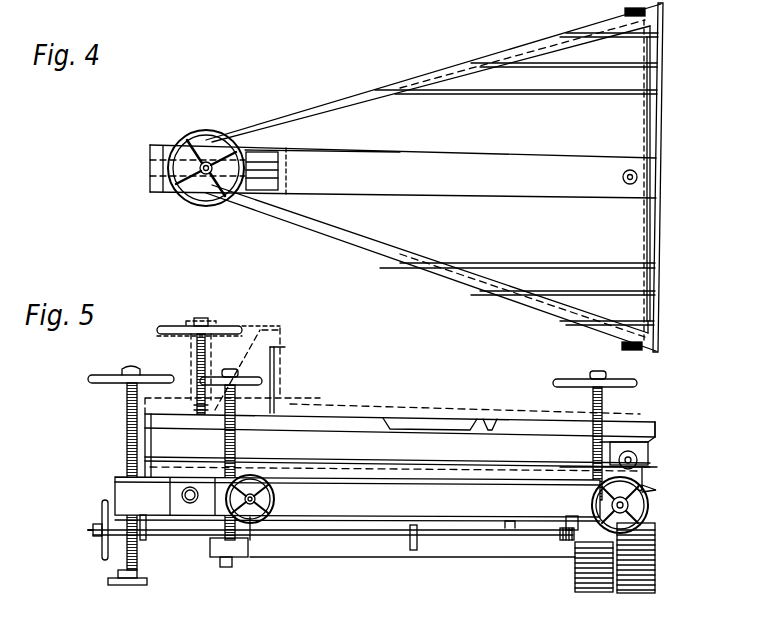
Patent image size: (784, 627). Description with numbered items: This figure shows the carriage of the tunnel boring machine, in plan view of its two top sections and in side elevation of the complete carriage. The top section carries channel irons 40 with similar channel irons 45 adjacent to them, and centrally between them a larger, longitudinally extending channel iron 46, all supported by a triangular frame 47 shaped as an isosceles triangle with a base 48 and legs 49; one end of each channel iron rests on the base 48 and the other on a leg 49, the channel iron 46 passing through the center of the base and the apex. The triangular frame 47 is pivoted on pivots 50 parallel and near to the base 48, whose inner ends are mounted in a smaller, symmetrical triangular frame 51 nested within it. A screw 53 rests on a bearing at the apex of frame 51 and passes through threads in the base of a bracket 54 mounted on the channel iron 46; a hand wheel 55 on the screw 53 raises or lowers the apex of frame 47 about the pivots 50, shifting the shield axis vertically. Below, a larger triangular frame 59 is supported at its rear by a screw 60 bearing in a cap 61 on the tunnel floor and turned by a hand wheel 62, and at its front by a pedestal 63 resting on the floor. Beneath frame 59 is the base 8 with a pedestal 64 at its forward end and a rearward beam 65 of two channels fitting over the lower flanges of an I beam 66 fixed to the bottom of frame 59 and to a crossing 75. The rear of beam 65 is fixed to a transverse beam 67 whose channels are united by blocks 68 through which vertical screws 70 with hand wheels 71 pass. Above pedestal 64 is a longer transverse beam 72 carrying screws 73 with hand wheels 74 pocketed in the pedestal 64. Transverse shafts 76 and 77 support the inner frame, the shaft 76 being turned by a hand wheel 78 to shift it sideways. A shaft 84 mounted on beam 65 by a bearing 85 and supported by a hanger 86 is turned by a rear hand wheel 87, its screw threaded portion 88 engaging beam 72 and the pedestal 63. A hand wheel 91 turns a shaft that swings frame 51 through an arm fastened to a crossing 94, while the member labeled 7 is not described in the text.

In FIG. 4, the frame member 7 is at (500, 292).
In FIG. 5, the frame member 7 is at (657, 439).
In FIG. 5, the base 8 is at (315, 558).
In FIG. 4, the channel irons 40 is at (556, 41).
In FIG. 5, the channel irons 40 is at (520, 420).
In FIG. 4, the channel irons 45 is at (516, 179).
In FIG. 5, the channel irons 45 is at (430, 418).
In FIG. 4, the channel iron 46 is at (403, 171).
In FIG. 5, the channel iron 46 is at (306, 414).
In FIG. 4, the triangular frame 47 is at (376, 93).
In FIG. 5, the triangular frame 47 is at (397, 453).
In FIG. 4, the base 48 is at (660, 150).
In FIG. 5, the base 48 is at (652, 446).
In FIG. 4, the legs 49 is at (326, 110).
In FIG. 5, the legs 49 is at (397, 451).
In FIG. 4, the pivots 50 is at (633, 183).
In FIG. 5, the pivots 50 is at (640, 461).
In FIG. 4, the triangular frame 51 is at (376, 110).
In FIG. 5, the triangular frame 51 is at (670, 477).
In FIG. 5, the screw 53 is at (196, 355).
In FIG. 4, the bracket 54 is at (282, 172).
In FIG. 5, the bracket 54 is at (281, 356).
In FIG. 4, the hand wheel 55 is at (222, 132).
In FIG. 5, the hand wheel 55 is at (190, 324).
In FIG. 5, the triangular frame 59 is at (357, 508).
In FIG. 5, the screw 60 is at (127, 445).
In FIG. 5, the cap 61 is at (108, 580).
In FIG. 5, the hand wheel 62 is at (116, 377).
In FIG. 5, the pedestal 63 is at (636, 566).
In FIG. 5, the pedestal 64 is at (594, 576).
In FIG. 5, the beam 65 is at (358, 548).
In FIG. 5, the I beam 66 is at (480, 510).
In FIG. 5, the beam 67 is at (214, 558).
In FIG. 5, the blocks 68 is at (233, 562).
In FIG. 5, the screws 70 is at (236, 447).
In FIG. 5, the hand wheels 71 is at (240, 378).
In FIG. 5, the beam 72 is at (574, 517).
In FIG. 5, the screws 73 is at (593, 452).
In FIG. 5, the hand wheels 74 is at (582, 379).
In FIG. 5, the crossing 75 is at (510, 516).
In FIG. 5, the shaft 76 is at (620, 505).
In FIG. 5, the shaft 77 is at (196, 500).
In FIG. 5, the hand wheel 78 is at (648, 515).
In FIG. 5, the shaft 84 is at (176, 537).
In FIG. 5, the bearing 85 is at (417, 540).
In FIG. 5, the hanger 86 is at (144, 540).
In FIG. 5, the hand wheel 87 is at (102, 545).
In FIG. 5, the screw threaded portion 88 is at (566, 541).
In FIG. 5, the hand wheel 91 is at (272, 490).
In FIG. 4, the crossing 94 is at (322, 142).